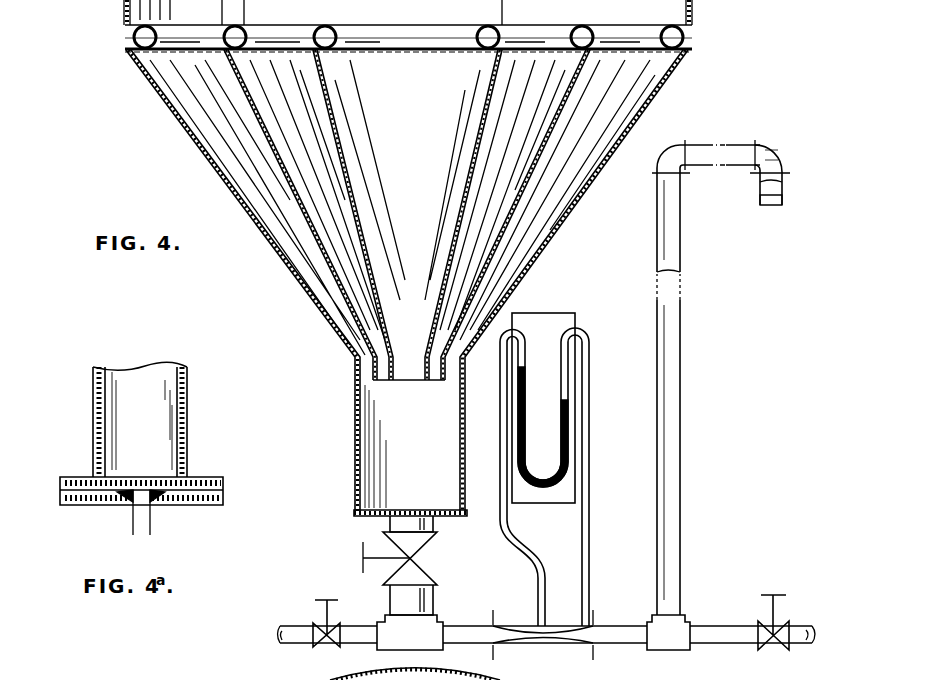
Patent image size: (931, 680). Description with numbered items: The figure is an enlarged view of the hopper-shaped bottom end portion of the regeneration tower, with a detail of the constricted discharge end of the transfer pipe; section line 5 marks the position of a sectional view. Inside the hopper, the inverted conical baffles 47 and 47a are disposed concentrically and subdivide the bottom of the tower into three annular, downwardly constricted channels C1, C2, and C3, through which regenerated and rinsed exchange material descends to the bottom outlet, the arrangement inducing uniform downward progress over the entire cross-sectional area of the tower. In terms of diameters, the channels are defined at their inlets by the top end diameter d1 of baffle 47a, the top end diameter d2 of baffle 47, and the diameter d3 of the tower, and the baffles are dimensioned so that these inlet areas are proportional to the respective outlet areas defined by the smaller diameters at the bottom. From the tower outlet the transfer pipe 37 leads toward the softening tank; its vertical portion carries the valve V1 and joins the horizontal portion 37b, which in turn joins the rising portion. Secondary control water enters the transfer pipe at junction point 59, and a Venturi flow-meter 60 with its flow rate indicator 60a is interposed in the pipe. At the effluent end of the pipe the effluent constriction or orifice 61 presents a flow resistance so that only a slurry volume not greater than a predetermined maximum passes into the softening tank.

In FIG. 4, the section line 5- 5 is at (98, 15).
In FIG. 4, the transfer pipe 37 is at (683, 479).
In FIG. 4A, the transfer pipe 37 is at (188, 403).
In FIG. 4, the horizontal portion of transfer pipe 37b is at (690, 661).
In FIG. 4, the inverted conical baffle 47 is at (270, 112).
In FIG. 4, the inverted conical baffle 47a is at (488, 92).
In FIG. 4, the junction point 59 is at (562, 6).
In FIG. 4, the Venturi flow-meter 60 is at (527, 624).
In FIG. 4, the flow rate indicator 60a is at (575, 332).
In FIG. 4, the effluent constriction or orifice 61 is at (771, 206).
In FIG. 4A, the effluent constriction or orifice 61 is at (143, 488).
In FIG. 4, the valve V1 is at (430, 558).
In FIG. 4, the central channel C1 is at (407, 180).
In FIG. 4, the intermediate annular channel C2 is at (407, 200).
In FIG. 4, the outer annular channel C3 is at (402, 207).
In FIG. 4, the top end diameter of inner baffle d1 is at (433, 400).
In FIG. 4, the top end diameter of outer baffle d2 is at (440, 422).
In FIG. 4, the diameter of the tower d3 is at (460, 450).